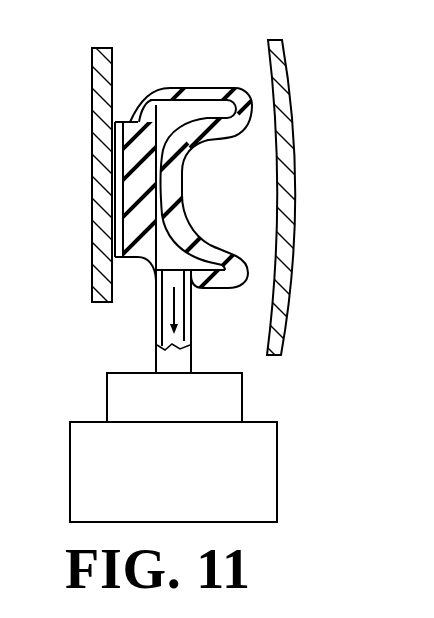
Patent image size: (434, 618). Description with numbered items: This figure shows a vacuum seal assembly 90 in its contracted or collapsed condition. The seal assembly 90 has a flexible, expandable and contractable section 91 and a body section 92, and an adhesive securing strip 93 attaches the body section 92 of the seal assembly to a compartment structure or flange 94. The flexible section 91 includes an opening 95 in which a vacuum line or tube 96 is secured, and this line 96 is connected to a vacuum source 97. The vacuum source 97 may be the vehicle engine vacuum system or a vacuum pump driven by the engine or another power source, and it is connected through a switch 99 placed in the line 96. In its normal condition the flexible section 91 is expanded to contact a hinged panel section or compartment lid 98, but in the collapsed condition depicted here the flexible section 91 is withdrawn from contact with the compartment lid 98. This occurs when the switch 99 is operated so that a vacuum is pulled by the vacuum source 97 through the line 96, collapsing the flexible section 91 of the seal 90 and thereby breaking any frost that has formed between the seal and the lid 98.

The vacuum seal assembly 90 is at (211, 39).
The flexible section 91 is at (172, 178).
The body section 92 is at (138, 103).
The adhesive securing strip 93 is at (117, 118).
The compartment structure or flange 94 is at (92, 74).
The opening 95 is at (193, 284).
The vacuum line or tube 96 is at (155, 308).
The vacuum source 97 is at (277, 468).
The compartment lid 98 is at (292, 117).
The switch 99 is at (243, 400).